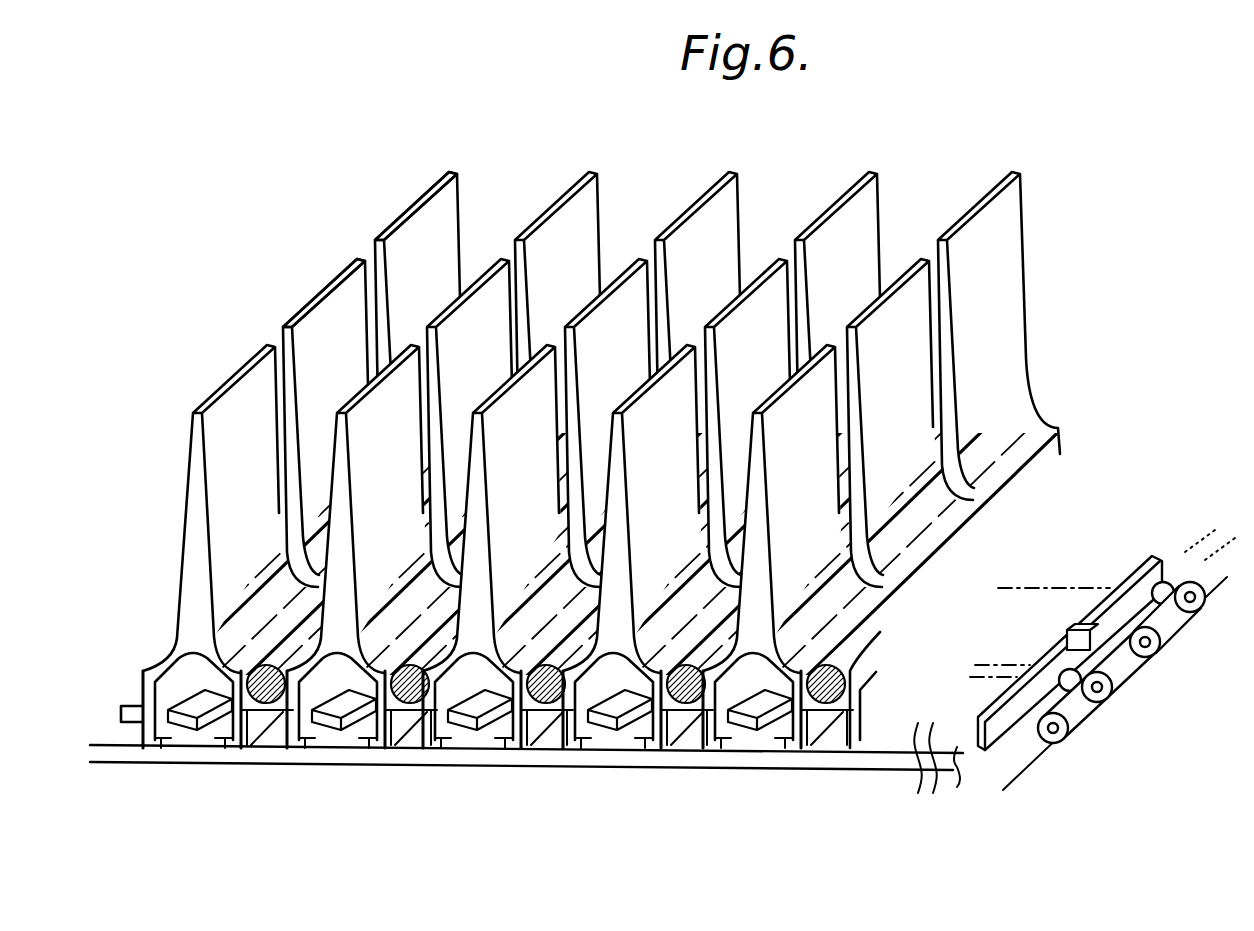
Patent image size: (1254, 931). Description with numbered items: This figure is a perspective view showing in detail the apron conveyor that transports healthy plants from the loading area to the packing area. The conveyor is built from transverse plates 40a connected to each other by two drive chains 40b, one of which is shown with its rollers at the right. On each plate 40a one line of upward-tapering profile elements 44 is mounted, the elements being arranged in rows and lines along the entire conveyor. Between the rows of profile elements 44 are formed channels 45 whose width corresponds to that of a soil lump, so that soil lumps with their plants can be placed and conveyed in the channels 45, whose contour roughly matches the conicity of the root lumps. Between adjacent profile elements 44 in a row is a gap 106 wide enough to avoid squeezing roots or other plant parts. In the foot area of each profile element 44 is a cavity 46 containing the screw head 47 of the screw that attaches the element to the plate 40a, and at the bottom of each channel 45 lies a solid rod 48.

The profile element 44 is at (224, 386).
The channel 45 is at (601, 391).
The cavity 46 is at (177, 677).
The screw head 47 is at (199, 712).
The solid rod 48 is at (264, 690).
The gap 106 is at (278, 333).
The plate 40a is at (662, 607).
The drive chain 40b is at (1097, 703).